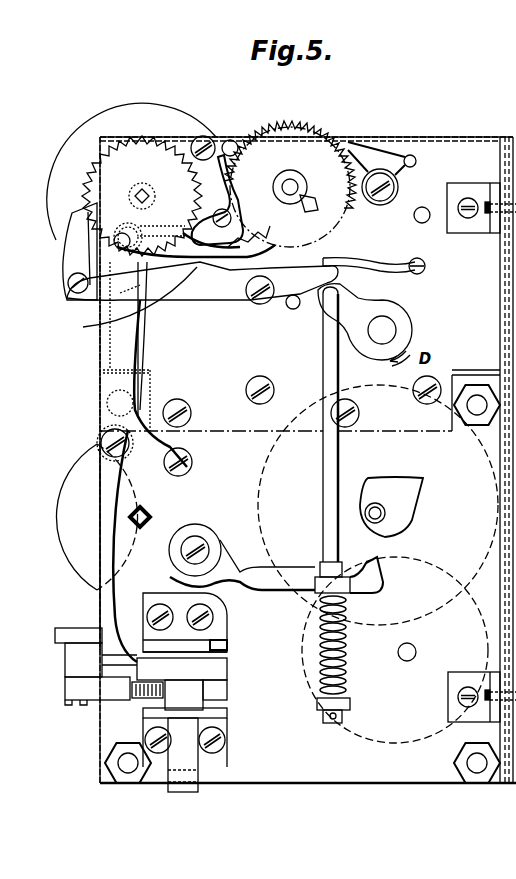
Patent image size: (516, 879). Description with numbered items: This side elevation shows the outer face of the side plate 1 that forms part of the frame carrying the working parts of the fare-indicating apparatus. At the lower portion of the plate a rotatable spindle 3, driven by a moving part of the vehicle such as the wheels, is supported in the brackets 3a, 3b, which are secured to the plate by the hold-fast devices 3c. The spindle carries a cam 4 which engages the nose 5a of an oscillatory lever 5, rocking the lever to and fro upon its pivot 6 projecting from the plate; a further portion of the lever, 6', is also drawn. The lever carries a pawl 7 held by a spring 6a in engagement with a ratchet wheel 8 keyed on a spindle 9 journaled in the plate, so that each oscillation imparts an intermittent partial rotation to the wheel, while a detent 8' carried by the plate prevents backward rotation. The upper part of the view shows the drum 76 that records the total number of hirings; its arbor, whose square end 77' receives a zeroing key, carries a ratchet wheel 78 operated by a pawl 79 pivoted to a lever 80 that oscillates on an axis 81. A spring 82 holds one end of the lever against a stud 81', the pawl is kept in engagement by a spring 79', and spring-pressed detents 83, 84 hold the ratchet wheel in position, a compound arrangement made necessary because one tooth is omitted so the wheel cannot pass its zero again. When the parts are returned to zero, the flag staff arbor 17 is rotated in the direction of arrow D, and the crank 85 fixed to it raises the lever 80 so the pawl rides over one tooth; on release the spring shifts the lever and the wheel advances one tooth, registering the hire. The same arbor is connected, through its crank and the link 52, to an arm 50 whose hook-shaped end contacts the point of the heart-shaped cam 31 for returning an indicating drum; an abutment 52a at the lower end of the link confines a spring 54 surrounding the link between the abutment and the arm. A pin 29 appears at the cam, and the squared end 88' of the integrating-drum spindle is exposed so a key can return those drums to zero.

The side plate 1 is at (330, 775).
The rotatable spindle 3 is at (183, 778).
The bracket 3a is at (222, 718).
The bracket 3b is at (216, 645).
The hold-fast devices 3c is at (208, 617).
The cam 4 is at (210, 670).
The oscillatory lever 5 is at (108, 543).
The nose 5a is at (130, 662).
The pivot 6 is at (109, 361).
The lever arm 6' is at (165, 383).
The spring 6a is at (110, 324).
The pawl 7 is at (262, 242).
The ratchet wheel 8 is at (290, 167).
The detent 8' is at (382, 151).
The spindle 9 is at (292, 185).
The flag staff arbor 17 is at (383, 330).
The pin 29 is at (377, 514).
The heart-shaped cam 31 is at (405, 494).
The arm 50 is at (285, 578).
The link 52 is at (336, 452).
The abutment 52a is at (351, 703).
The spring 54 is at (350, 605).
The drum 76 is at (176, 118).
The square end of arbor 77' is at (142, 196).
The ratchet wheel 78 is at (125, 157).
The pawl 79 is at (51, 251).
The spring 79' is at (48, 274).
The lever 80 is at (201, 300).
The axis 81 is at (258, 308).
The stud 81' is at (293, 322).
The spring 82 is at (375, 268).
The spring-pressed detent 83 is at (228, 160).
The spring-pressed detent 84 is at (183, 236).
The crank 85 is at (365, 312).
The squared end of spindle 88' is at (121, 517).